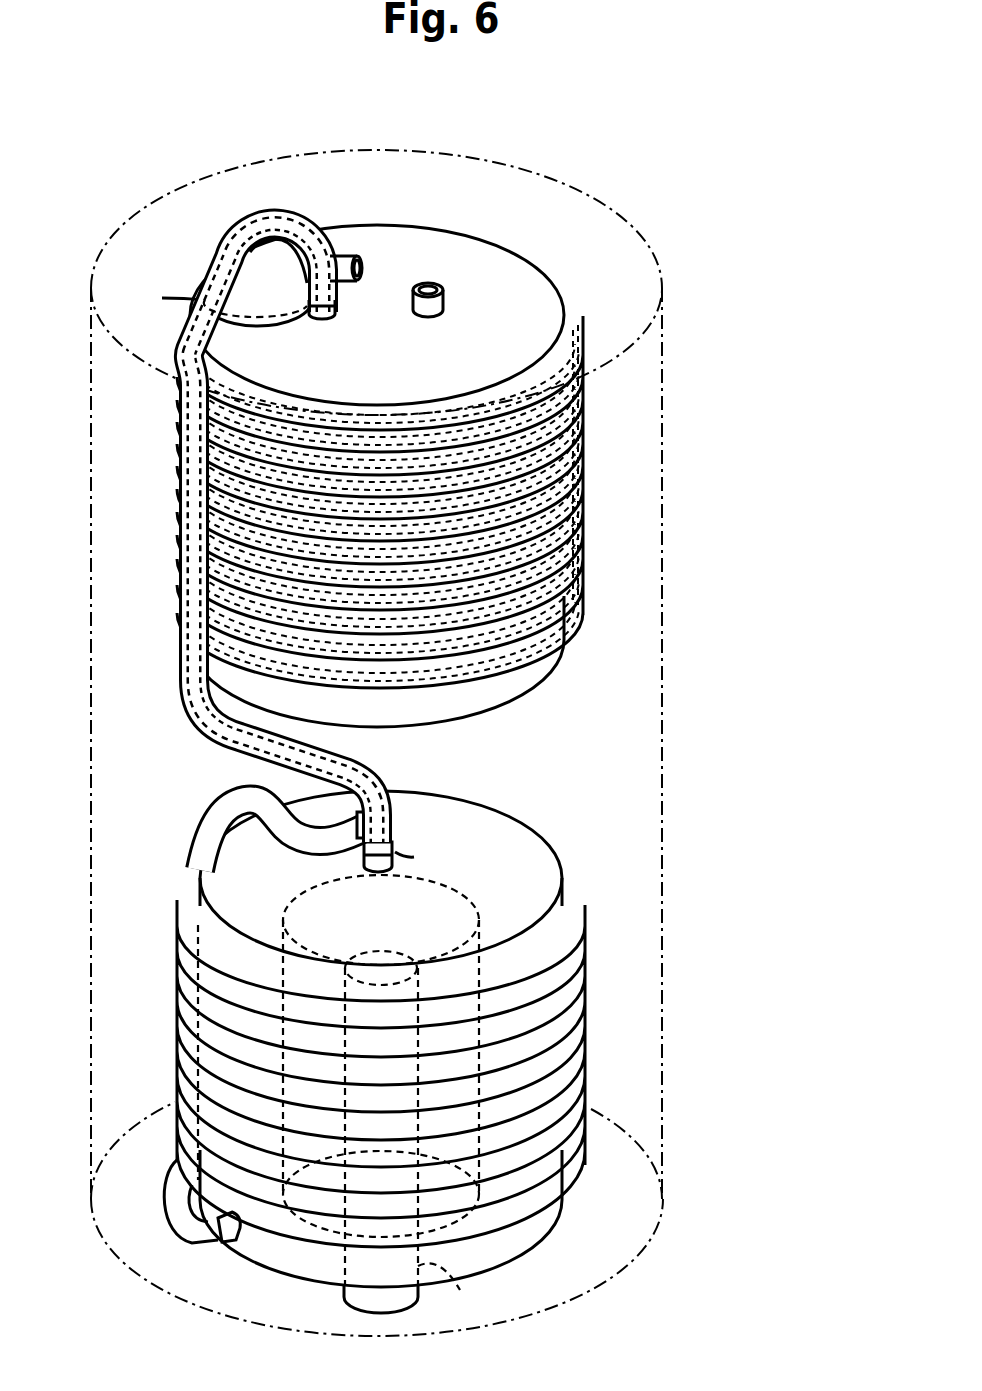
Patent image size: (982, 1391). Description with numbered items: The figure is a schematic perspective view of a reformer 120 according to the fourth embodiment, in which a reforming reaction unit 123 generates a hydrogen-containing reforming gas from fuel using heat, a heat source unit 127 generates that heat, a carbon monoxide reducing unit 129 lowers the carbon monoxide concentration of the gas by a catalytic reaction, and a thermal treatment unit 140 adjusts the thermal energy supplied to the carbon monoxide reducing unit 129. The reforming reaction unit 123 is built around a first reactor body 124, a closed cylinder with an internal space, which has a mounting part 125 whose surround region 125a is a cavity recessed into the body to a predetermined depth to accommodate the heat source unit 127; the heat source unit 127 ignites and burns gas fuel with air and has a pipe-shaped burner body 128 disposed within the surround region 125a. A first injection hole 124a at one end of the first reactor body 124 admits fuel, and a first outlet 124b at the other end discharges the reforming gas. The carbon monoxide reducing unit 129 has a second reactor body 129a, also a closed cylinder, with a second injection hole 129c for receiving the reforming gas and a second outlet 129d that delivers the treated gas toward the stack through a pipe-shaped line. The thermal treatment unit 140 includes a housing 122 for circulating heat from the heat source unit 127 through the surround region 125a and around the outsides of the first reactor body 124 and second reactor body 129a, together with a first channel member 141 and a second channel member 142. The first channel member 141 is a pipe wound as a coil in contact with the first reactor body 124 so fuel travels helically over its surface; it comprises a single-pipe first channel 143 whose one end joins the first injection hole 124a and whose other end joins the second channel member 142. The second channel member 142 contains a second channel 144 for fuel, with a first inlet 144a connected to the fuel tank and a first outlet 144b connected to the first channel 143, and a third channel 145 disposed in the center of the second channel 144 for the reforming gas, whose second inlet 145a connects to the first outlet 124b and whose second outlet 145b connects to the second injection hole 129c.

The reformer 120 is at (703, 165).
The housing 122 is at (662, 393).
The reforming reaction unit 123 is at (557, 829).
The first reactor body 124 is at (528, 797).
The first injection hole 124a is at (233, 1240).
The first outlet 124b is at (400, 856).
The mounting part 125 is at (480, 933).
The surround region 125a is at (462, 978).
The heat source unit 127 is at (331, 1306).
The burner body 128 is at (460, 1290).
The carbon monoxide reducing unit 129 is at (357, 448).
The second reactor body 129a is at (511, 252).
The second injection hole 129c is at (206, 282).
The second outlet 129d is at (430, 283).
The thermal treatment unit 140 is at (702, 801).
The first channel member 141 is at (378, 1040).
The second channel member 142 is at (353, 475).
The first channel 143 is at (176, 1005).
The second channel 144 is at (291, 481).
The first inlet 144a is at (347, 253).
The first outlet 144b is at (330, 792).
The third channel 145 is at (238, 210).
The second inlet 145a is at (410, 837).
The second outlet 145b is at (213, 264).